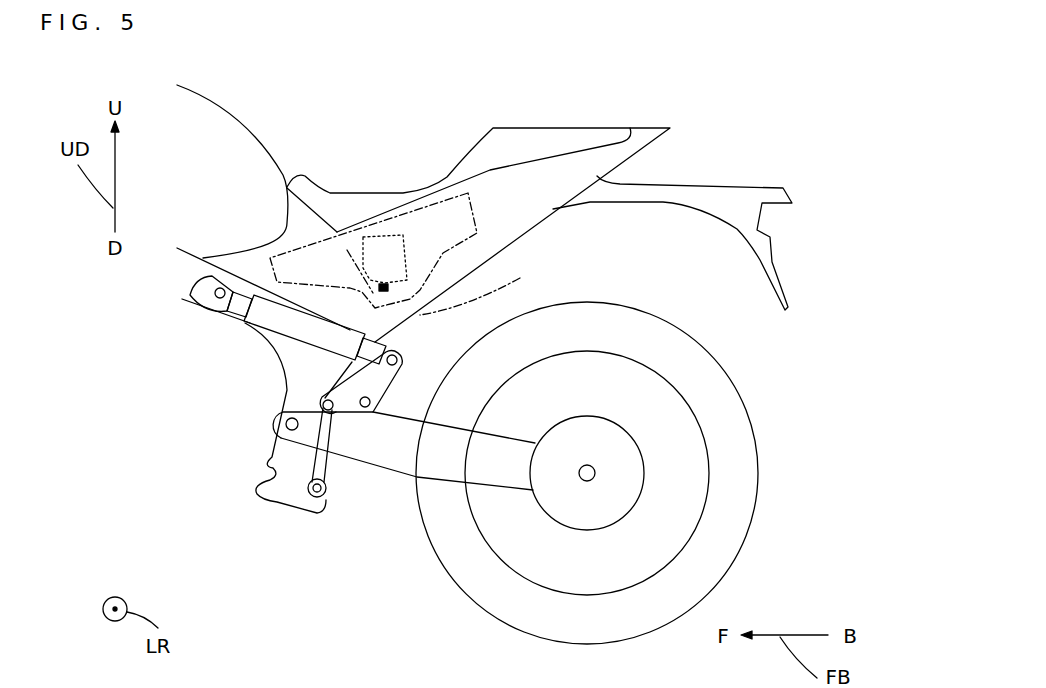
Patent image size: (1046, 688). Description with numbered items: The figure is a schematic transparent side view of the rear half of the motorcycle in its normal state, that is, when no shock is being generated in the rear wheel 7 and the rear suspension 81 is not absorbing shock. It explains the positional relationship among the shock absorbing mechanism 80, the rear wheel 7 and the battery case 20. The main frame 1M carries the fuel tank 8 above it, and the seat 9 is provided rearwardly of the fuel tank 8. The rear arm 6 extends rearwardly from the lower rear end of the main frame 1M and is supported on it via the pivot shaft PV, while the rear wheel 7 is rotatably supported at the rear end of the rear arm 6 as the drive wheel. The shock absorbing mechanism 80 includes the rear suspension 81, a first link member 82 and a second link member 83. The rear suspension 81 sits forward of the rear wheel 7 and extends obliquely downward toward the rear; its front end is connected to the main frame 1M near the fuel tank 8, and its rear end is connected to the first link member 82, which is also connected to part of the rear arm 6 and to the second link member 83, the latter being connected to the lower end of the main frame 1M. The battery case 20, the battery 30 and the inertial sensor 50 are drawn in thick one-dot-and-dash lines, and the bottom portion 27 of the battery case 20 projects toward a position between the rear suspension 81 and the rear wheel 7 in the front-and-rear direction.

The main frame 1M is at (267, 452).
The rear arm 6 is at (503, 458).
The rear wheel 7 is at (727, 448).
The fuel tank 8 is at (210, 147).
The seat 9 is at (577, 138).
The battery case 20 is at (430, 205).
The bottom portion 27 is at (606, 245).
The battery 30 is at (384, 233).
The inertial sensor 50 is at (337, 240).
The shock absorbing mechanism 80 is at (360, 430).
The rear suspension 81 is at (287, 318).
The first link member 82 is at (372, 392).
The second link member 83 is at (307, 450).
The pivot shaft PV is at (290, 423).